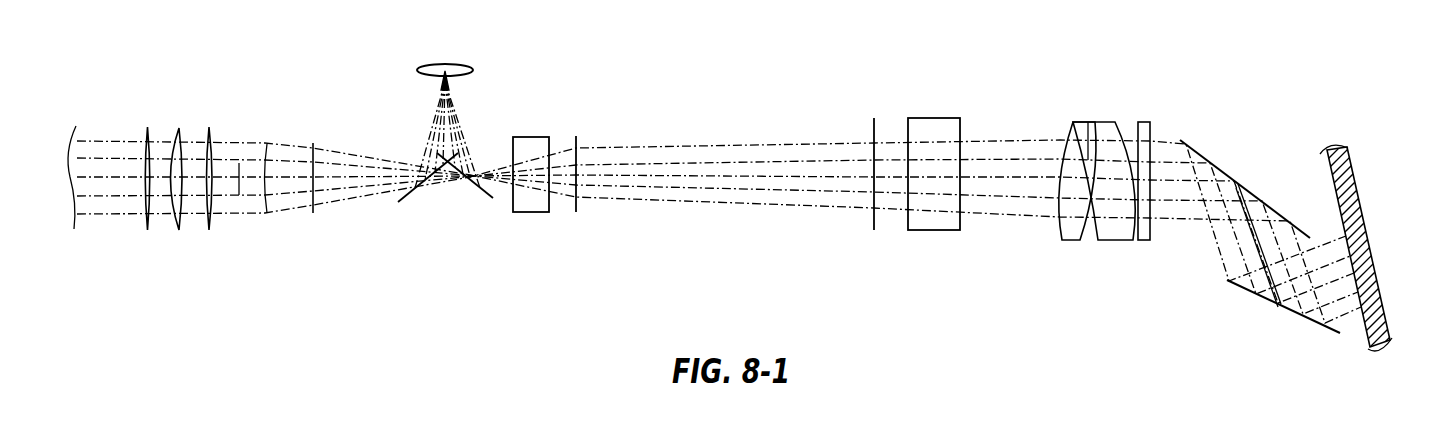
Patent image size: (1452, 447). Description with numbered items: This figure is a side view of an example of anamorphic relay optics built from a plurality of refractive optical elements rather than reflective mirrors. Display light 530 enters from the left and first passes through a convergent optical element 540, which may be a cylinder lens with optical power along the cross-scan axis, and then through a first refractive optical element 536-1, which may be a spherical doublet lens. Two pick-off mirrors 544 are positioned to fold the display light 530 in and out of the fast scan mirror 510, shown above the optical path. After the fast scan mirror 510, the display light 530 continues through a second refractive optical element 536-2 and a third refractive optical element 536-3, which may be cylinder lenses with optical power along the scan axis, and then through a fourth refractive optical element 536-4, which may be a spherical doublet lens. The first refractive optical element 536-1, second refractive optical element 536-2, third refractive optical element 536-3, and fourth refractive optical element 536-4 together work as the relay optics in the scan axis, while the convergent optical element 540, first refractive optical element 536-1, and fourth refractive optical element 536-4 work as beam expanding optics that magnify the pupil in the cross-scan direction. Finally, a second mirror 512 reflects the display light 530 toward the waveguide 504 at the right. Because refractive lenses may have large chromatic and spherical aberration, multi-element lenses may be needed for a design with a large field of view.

The convergent optical element 540 is at (147, 127).
The first refractive optical element 536-1 is at (212, 224).
The display light 530 is at (333, 177).
The fast scan mirror 510 is at (463, 66).
The pick-off mirrors 544 is at (413, 190).
The second refractive optical element 536-2 is at (540, 213).
The third refractive optical element 536-3 is at (937, 230).
The fourth refractive optical element 536-4 is at (1107, 240).
The second mirror 512 is at (1227, 281).
The waveguide 504 is at (1367, 230).